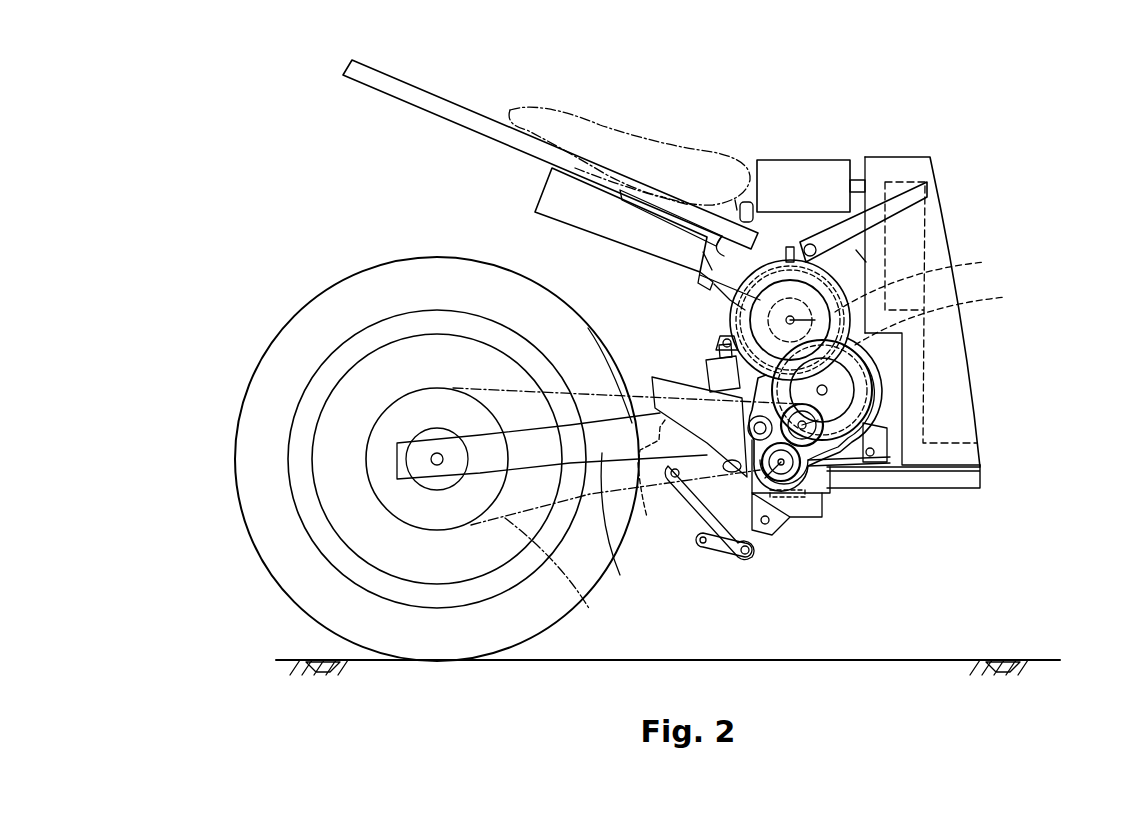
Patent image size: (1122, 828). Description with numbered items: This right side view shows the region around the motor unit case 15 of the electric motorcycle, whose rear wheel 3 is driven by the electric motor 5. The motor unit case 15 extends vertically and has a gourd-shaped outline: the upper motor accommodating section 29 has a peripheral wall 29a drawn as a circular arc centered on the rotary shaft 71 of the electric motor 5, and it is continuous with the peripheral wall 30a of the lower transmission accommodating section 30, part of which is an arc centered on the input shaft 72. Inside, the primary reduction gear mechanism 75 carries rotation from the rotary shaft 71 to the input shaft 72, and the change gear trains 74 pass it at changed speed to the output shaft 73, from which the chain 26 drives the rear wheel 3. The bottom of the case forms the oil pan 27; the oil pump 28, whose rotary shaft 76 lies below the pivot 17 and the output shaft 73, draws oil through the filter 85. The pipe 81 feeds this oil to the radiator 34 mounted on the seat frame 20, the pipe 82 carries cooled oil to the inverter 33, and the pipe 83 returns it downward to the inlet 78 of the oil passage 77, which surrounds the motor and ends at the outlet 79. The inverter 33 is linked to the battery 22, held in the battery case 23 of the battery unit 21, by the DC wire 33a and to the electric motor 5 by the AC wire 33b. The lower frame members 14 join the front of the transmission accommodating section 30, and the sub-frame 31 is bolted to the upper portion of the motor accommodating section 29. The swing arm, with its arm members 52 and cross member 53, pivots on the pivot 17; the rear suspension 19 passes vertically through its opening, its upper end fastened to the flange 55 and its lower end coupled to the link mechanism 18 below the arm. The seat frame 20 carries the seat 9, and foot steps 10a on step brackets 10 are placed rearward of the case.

The rear wheel 3 is at (280, 532).
The electric motor 5 is at (860, 255).
The seat 9 is at (606, 128).
The step bracket 10 is at (652, 377).
The foot step 10a is at (705, 550).
The lower frame member 14 is at (950, 488).
The motor unit case 15 is at (730, 318).
The pivot 17 is at (703, 470).
The link mechanism 18 is at (721, 572).
The rear suspension 19 is at (716, 372).
The seat frame 20 is at (398, 90).
The battery unit 21 is at (988, 388).
The battery 22 is at (953, 443).
The battery case 23 is at (960, 418).
The chain 26 is at (632, 463).
The oil pan 27 is at (793, 520).
The oil pump 28 is at (790, 517).
The motor accommodating section 29 is at (781, 234).
The peripheral wall 29a is at (745, 252).
The transmission accommodating section 30 is at (851, 452).
The peripheral wall 30a is at (845, 365).
The sub-frame 31 is at (905, 213).
The inverter 33 is at (842, 162).
The wire 33a is at (858, 180).
The wire 33b is at (866, 255).
The radiator 34 is at (540, 185).
The arm member 52 is at (620, 575).
The cross member 53 is at (647, 517).
The flange 55 is at (727, 342).
The rotary shaft 71 is at (815, 310).
The input shaft 72 is at (827, 390).
The output shaft 73 is at (810, 500).
The change gear train 74 is at (820, 445).
The primary reduction gear mechanism 75 is at (722, 330).
The rotary shaft 76 is at (760, 533).
The oil passage 77 is at (924, 280).
The inlet 78 is at (810, 244).
The outlet 79 is at (944, 314).
The pipe 81 is at (703, 252).
The pipe 82 is at (735, 200).
The pipe 83 is at (790, 247).
The filter 85 is at (798, 500).